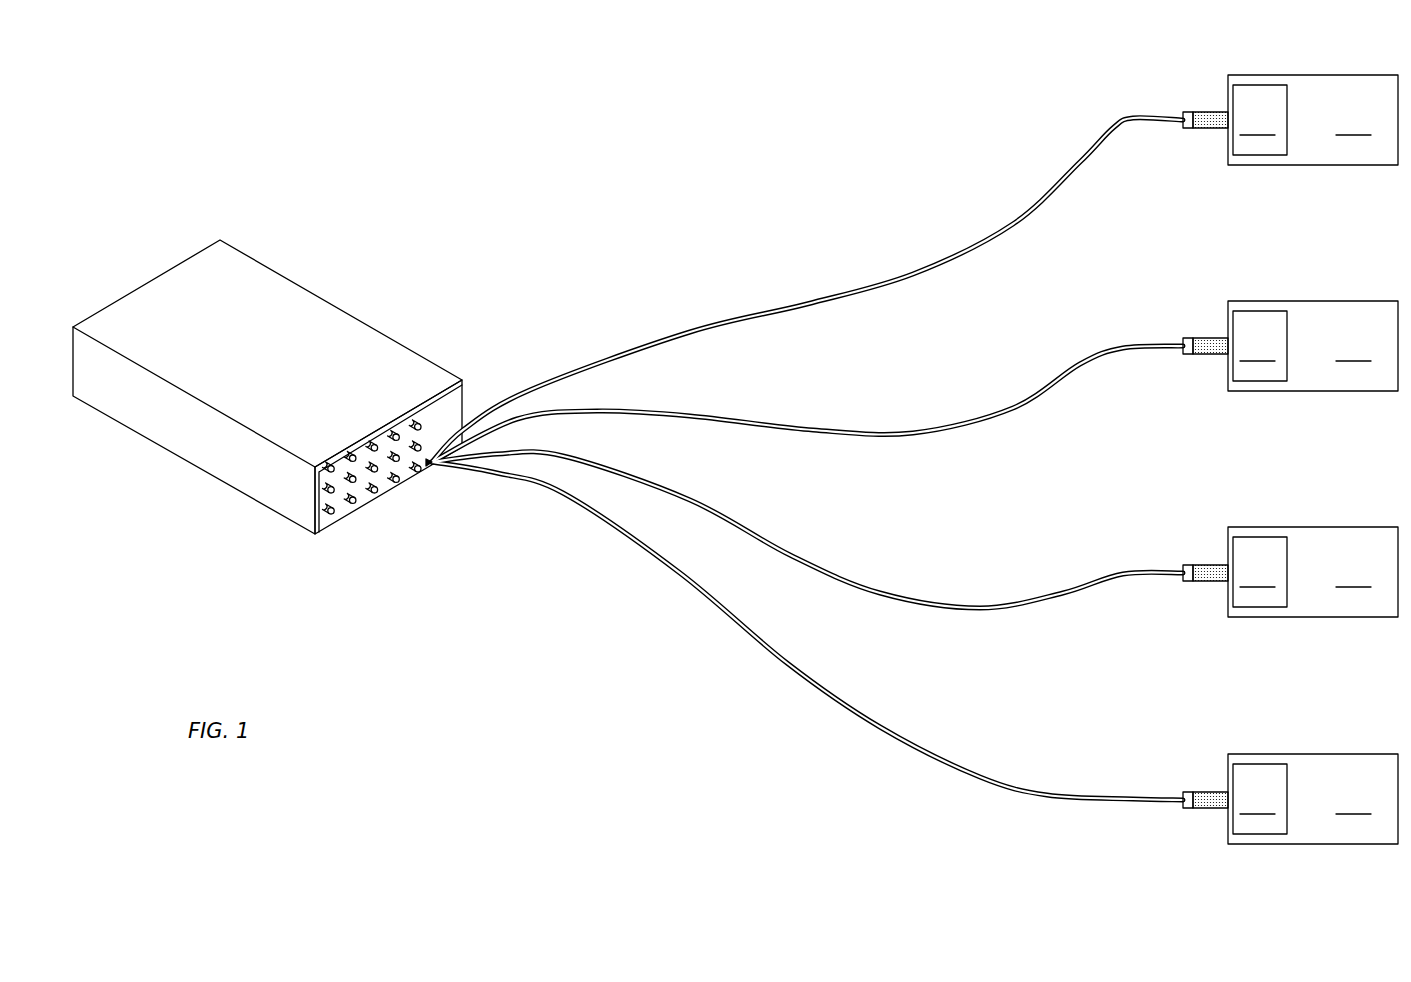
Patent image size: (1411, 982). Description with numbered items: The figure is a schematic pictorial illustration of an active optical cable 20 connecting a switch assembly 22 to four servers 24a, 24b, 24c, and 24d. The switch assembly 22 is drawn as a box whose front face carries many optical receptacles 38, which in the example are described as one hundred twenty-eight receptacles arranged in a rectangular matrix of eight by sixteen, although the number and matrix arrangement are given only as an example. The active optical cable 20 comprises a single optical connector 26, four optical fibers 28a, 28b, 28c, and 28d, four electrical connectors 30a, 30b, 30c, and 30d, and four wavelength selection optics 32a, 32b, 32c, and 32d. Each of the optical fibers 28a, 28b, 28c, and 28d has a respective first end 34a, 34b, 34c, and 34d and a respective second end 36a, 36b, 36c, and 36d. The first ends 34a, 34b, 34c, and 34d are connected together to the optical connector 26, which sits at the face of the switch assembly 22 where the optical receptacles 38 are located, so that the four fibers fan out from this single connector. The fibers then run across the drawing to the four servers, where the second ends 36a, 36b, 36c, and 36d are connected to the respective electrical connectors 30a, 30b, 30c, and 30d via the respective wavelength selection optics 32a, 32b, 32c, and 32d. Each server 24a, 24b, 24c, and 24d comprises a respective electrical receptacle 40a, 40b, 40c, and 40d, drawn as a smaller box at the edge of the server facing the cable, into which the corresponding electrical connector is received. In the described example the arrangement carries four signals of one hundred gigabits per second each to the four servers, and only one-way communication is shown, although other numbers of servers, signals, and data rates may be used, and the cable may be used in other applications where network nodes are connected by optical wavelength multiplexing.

The active optical cable 20 is at (530, 667).
The switch assembly 22 is at (378, 330).
The server 24a is at (1313, 120).
The server 24b is at (1313, 346).
The server 24c is at (1313, 572).
The server 24d is at (1313, 799).
The optical connector 26 is at (418, 470).
The optical fiber 28a is at (805, 302).
The optical fiber 28b is at (806, 427).
The optical fiber 28c is at (788, 552).
The optical fiber 28d is at (788, 660).
The electrical connector 30a is at (1200, 128).
The electrical connector 30b is at (1200, 354).
The electrical connector 30c is at (1200, 581).
The electrical connector 30d is at (1200, 808).
The wavelength selection optics 32a is at (1191, 112).
The wavelength selection optics 32b is at (1191, 338).
The wavelength selection optics 32c is at (1191, 565).
The wavelength selection optics 32d is at (1191, 792).
The first end 34a is at (488, 410).
The first end 34b is at (517, 420).
The first end 34c is at (495, 453).
The first end 34d is at (490, 478).
The second end 36a is at (1136, 115).
The second end 36b is at (1136, 342).
The second end 36c is at (1136, 568).
The second end 36d is at (1136, 795).
The optical receptacles 38 is at (365, 509).
The electrical receptacle 40a is at (1260, 120).
The electrical receptacle 40b is at (1260, 346).
The electrical receptacle 40c is at (1260, 572).
The electrical receptacle 40d is at (1260, 799).